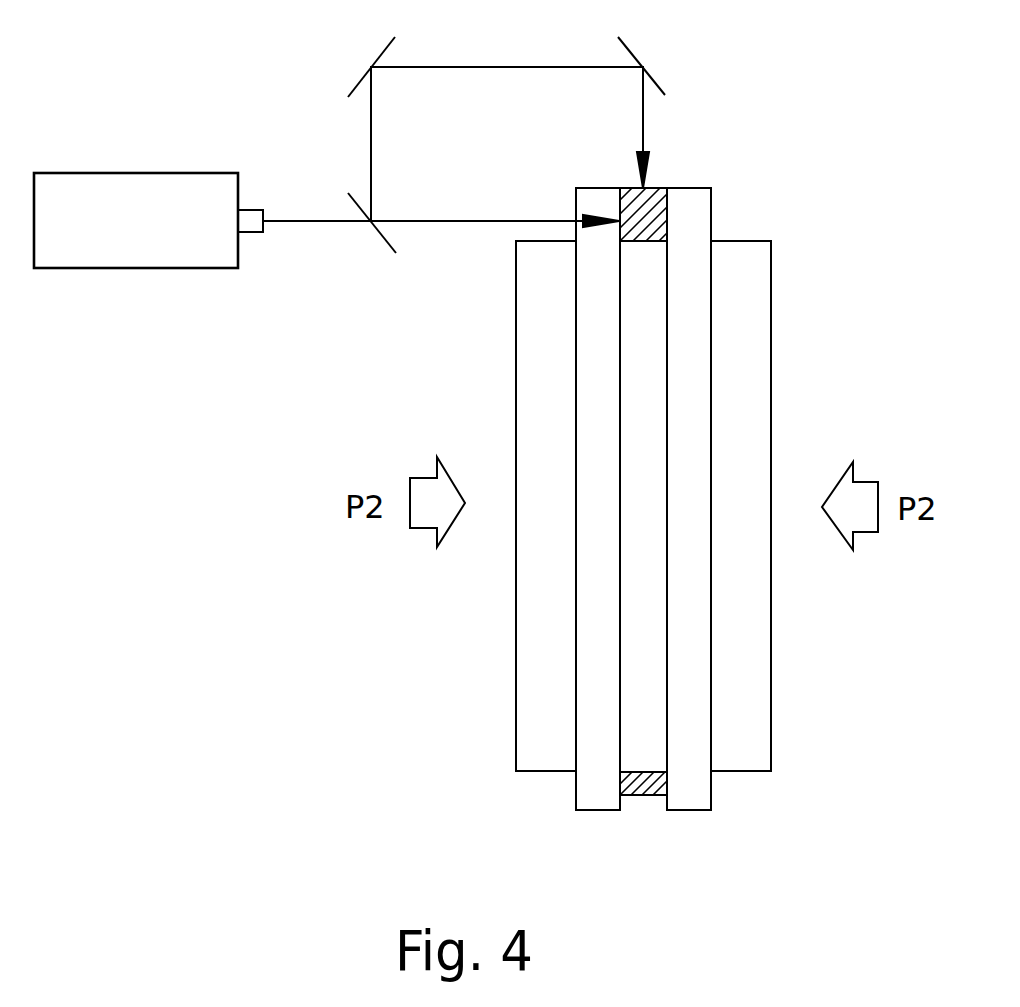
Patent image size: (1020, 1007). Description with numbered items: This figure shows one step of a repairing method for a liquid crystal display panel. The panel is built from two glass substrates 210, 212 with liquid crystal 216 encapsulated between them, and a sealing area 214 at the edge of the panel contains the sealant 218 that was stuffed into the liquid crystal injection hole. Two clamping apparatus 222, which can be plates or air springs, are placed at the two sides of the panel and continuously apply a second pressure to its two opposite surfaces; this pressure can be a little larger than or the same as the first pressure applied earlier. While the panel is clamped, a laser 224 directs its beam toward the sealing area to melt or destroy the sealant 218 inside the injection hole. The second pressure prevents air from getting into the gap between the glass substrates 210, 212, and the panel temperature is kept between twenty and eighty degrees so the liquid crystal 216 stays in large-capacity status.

The glass substrate 210 is at (597, 810).
The glass substrate 212 is at (694, 810).
The sealing area 214 is at (631, 795).
The liquid crystal 216 is at (653, 390).
The sealant 218 is at (657, 197).
The clamping apparatus 222 is at (516, 678).
The laser 224 is at (90, 173).